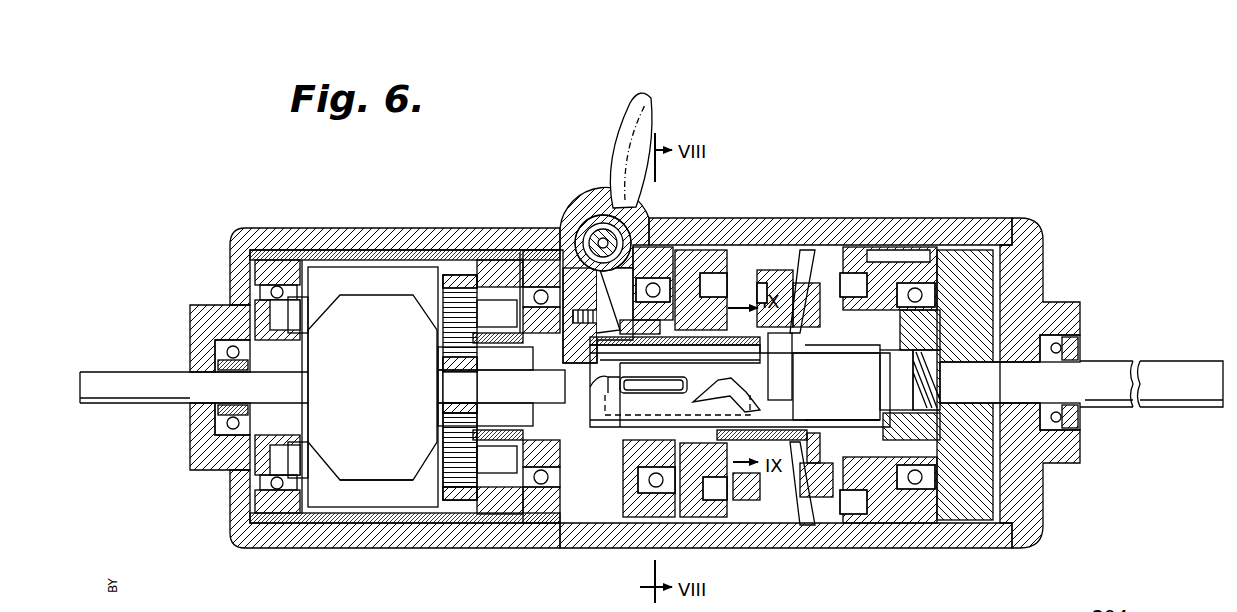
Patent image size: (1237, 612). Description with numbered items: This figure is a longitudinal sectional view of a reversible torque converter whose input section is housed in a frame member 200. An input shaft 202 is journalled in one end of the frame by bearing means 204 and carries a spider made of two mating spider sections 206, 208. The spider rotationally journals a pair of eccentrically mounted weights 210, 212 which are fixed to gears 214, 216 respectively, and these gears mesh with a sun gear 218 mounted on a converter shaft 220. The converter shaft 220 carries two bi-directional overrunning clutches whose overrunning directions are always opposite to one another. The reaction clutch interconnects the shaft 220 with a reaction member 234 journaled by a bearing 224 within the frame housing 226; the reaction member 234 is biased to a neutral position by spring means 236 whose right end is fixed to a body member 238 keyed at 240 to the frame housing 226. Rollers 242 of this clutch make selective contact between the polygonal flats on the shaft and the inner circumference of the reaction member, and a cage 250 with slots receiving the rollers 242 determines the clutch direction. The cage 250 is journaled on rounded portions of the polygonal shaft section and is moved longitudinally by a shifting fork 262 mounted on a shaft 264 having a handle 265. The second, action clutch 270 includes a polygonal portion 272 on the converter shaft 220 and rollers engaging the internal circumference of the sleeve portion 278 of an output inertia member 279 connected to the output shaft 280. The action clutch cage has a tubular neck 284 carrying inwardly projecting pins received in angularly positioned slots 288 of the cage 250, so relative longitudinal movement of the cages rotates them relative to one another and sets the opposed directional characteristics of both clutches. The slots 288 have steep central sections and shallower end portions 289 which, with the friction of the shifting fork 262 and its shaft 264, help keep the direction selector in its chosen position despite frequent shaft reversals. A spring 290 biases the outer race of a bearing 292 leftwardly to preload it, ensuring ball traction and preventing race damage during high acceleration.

The frame member 200 is at (292, 222).
The input shaft 202 is at (143, 371).
The bearing means 204 is at (222, 338).
The spider section 206 is at (272, 262).
The spider section 208 is at (512, 356).
The eccentrically mounted weight 210 is at (352, 290).
The eccentrically mounted weight 212 is at (350, 495).
The gear 214 is at (452, 290).
The gear 216 is at (455, 500).
The sun gear 218 is at (440, 374).
The converter shaft 220 is at (496, 386).
The bearing 224 is at (660, 272).
The frame housing 226 is at (784, 213).
The reaction member 234 is at (738, 290).
The spring means 236 is at (801, 270).
The body member 238 is at (936, 243).
The key 240 is at (916, 243).
The rollers 242 is at (591, 381).
The cage 250 is at (616, 434).
The shifting fork 262 is at (536, 256).
The shaft 264 is at (592, 216).
The handle 265 is at (633, 123).
The action clutch 270 is at (884, 540).
The polygonal portion 272 is at (836, 386).
The sleeve portion 278 is at (871, 242).
The output inertia member 279 is at (980, 243).
The output shaft 280 is at (1108, 367).
The tubular neck 284 is at (840, 262).
The slots 288 is at (798, 371).
The end portions 289 is at (653, 397).
The spring 290 is at (1000, 457).
The bearing 292 is at (1042, 278).